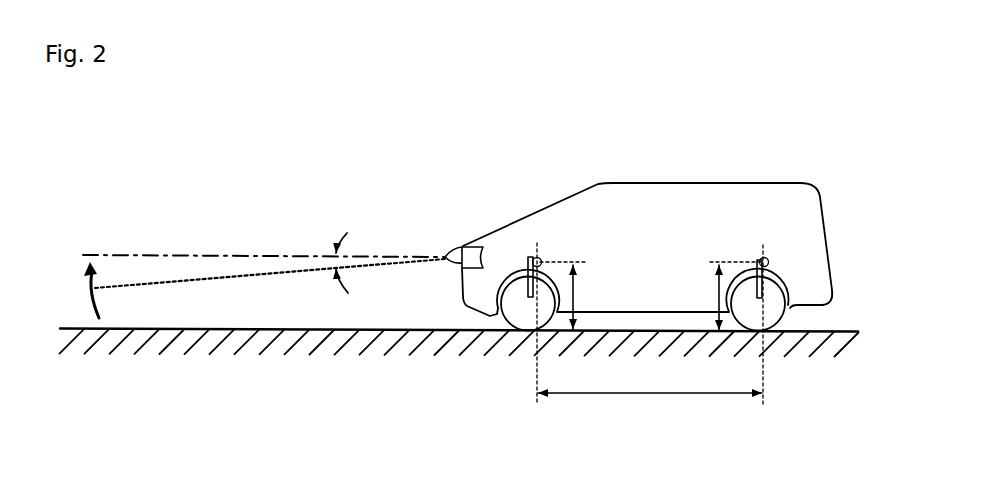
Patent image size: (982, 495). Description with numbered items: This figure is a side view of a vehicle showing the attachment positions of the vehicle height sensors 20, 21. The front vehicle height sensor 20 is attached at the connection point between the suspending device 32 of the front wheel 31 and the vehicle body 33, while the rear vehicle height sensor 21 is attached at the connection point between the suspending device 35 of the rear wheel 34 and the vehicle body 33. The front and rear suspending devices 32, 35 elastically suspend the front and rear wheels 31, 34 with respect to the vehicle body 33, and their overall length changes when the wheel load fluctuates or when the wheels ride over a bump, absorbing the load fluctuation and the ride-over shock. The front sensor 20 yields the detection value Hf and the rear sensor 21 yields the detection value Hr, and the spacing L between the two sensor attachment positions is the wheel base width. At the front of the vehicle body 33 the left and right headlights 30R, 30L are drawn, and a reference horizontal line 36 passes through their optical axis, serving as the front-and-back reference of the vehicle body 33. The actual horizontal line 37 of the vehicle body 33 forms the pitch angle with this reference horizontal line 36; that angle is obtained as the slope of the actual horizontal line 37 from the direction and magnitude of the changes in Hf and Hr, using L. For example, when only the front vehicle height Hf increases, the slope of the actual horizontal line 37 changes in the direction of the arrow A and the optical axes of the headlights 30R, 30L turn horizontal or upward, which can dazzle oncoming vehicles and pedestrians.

The front vehicle height sensor 20 is at (543, 261).
The rear vehicle height sensor 21 is at (768, 260).
The right headlight 30R is at (423, 223).
The left headlight 30L is at (448, 252).
The front wheel 31 is at (522, 320).
The front suspending device 32 is at (462, 292).
The vehicle body 33 is at (683, 183).
The rear wheel 34 is at (775, 314).
The rear suspending device 35 is at (782, 279).
The reference horizontal line 36 is at (138, 249).
The actual horizontal line 37 is at (155, 285).
The arrow A is at (88, 279).
The detection value of front vehicle height sensor Hf is at (574, 305).
The detection value of rear vehicle height sensor Hr is at (719, 294).
The spacing L is at (643, 393).